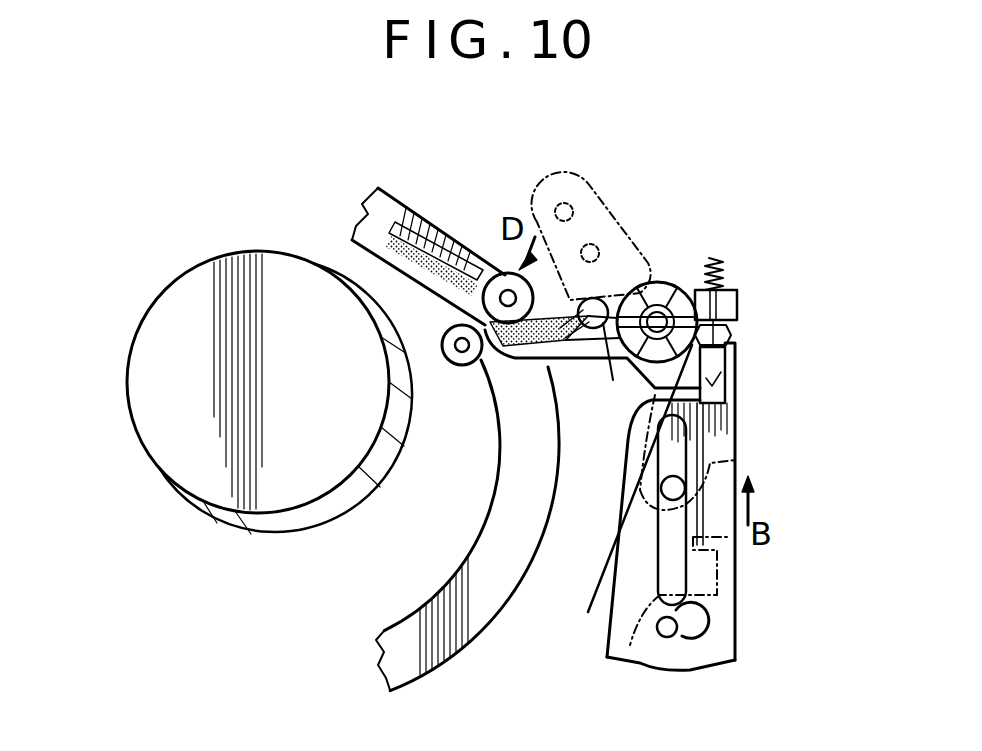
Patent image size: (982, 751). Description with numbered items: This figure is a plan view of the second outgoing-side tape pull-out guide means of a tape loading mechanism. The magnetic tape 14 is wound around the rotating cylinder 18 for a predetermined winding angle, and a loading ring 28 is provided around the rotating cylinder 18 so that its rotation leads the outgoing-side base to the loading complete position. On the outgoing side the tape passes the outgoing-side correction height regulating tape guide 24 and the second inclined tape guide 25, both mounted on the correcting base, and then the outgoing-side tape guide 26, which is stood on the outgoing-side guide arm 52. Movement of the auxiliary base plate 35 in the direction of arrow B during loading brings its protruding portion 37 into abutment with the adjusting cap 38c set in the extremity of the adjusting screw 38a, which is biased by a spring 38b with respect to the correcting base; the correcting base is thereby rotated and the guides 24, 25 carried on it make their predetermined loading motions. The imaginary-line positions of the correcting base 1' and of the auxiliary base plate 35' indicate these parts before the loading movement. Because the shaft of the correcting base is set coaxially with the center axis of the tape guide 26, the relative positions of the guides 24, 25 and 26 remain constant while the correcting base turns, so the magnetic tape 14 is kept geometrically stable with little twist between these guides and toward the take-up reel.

The rotating cylinder 18 is at (197, 283).
The loading ring 28 is at (472, 618).
The magnetic tape 14 is at (408, 232).
The outgoing-side correction height regulating tape guide 24 is at (484, 255).
The second inclined tape guide 25 is at (600, 298).
The outgoing-side tape guide 26 is at (673, 290).
The phantom member 1' is at (590, 208).
The adjusting screw 38a is at (723, 262).
The spring 38b is at (737, 302).
The adjusting cap 38c is at (727, 338).
The protruding portion 37 is at (738, 396).
The auxiliary base plate 35 is at (719, 506).
The outgoing-side guide arm 52 is at (746, 472).
The lever in phantom position 35' is at (722, 520).